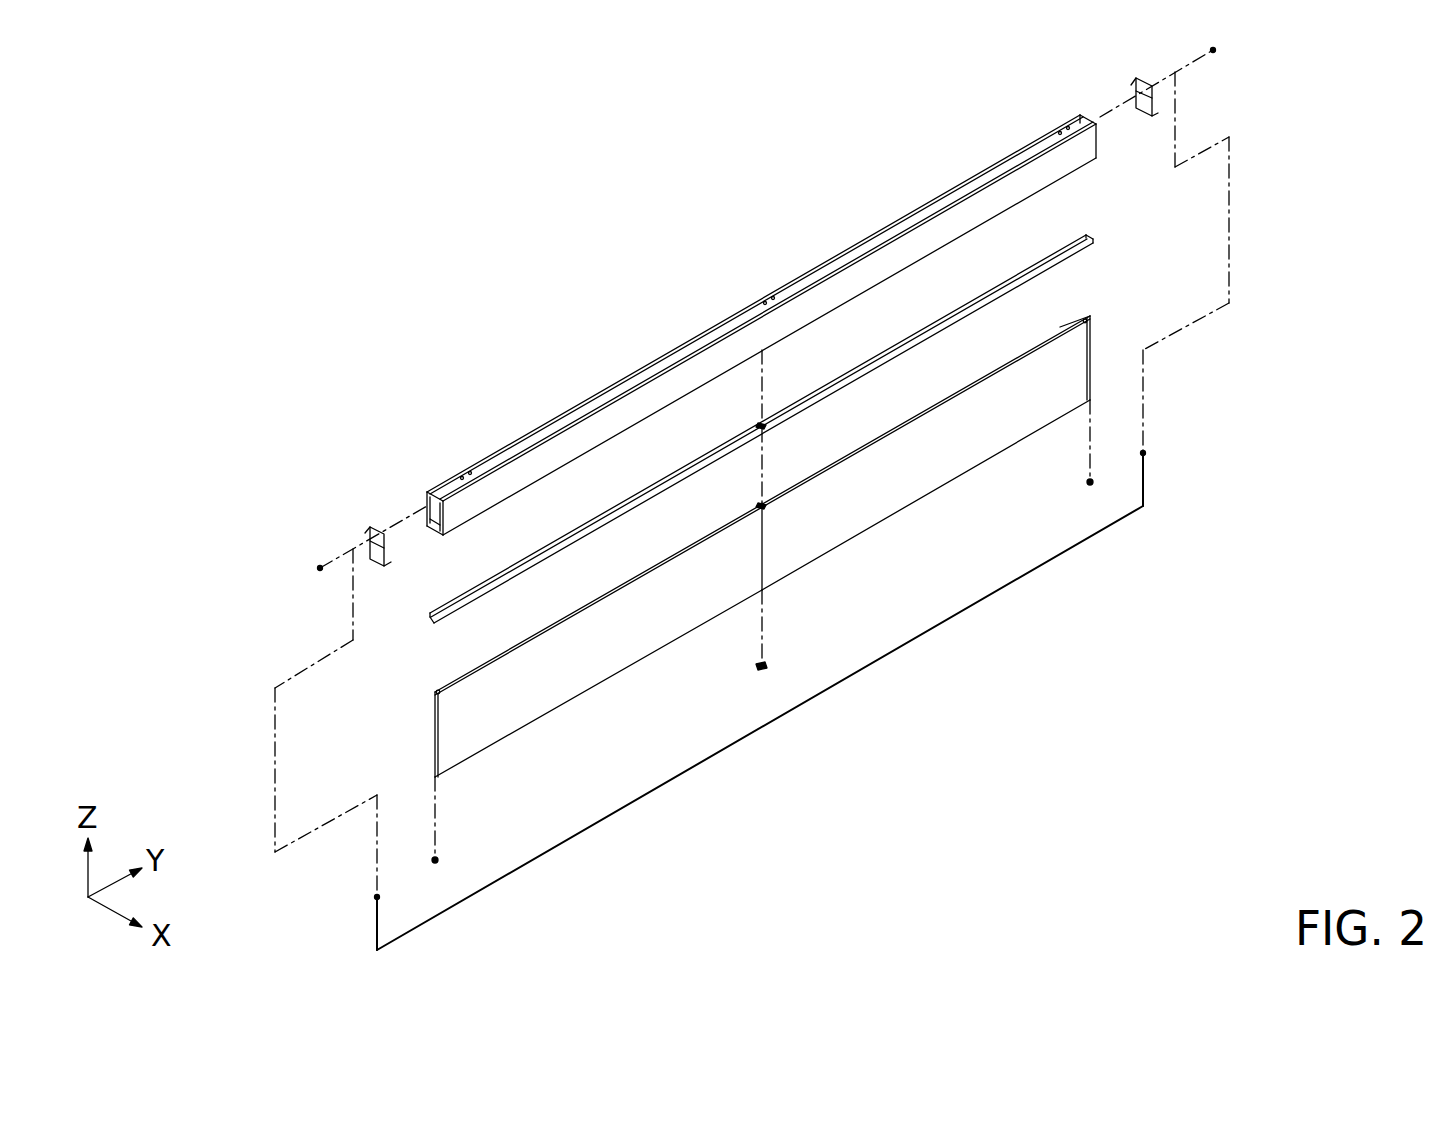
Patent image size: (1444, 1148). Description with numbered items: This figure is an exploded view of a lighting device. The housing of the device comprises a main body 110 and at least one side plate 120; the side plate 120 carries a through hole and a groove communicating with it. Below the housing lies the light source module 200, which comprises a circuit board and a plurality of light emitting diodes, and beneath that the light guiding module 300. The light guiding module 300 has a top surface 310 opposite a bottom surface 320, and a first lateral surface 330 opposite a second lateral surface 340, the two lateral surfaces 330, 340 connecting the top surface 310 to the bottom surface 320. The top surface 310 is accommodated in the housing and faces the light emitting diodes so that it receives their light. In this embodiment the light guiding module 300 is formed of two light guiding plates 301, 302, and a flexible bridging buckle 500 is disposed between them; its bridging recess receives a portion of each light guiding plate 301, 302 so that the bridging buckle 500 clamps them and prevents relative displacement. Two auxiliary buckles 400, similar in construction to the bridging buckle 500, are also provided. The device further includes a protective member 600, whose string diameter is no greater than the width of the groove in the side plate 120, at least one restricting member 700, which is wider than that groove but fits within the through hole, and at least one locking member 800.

The main body 110 is at (648, 372).
The side plate 120 is at (370, 528).
The light source module 200 is at (430, 616).
The light guiding module 300 is at (745, 510).
The light guiding plate 301 is at (573, 675).
The light guiding plate 302 is at (897, 487).
The top surface 310 is at (1058, 326).
The bottom surface 320 is at (815, 562).
The first lateral surface 330 is at (433, 752).
The second lateral surface 340 is at (1092, 343).
The auxiliary buckle 400 is at (438, 860).
The bridging buckle 500 is at (767, 665).
The protective member 600 is at (760, 728).
The restricting member 700 is at (377, 897).
The locking member 800 is at (320, 568).